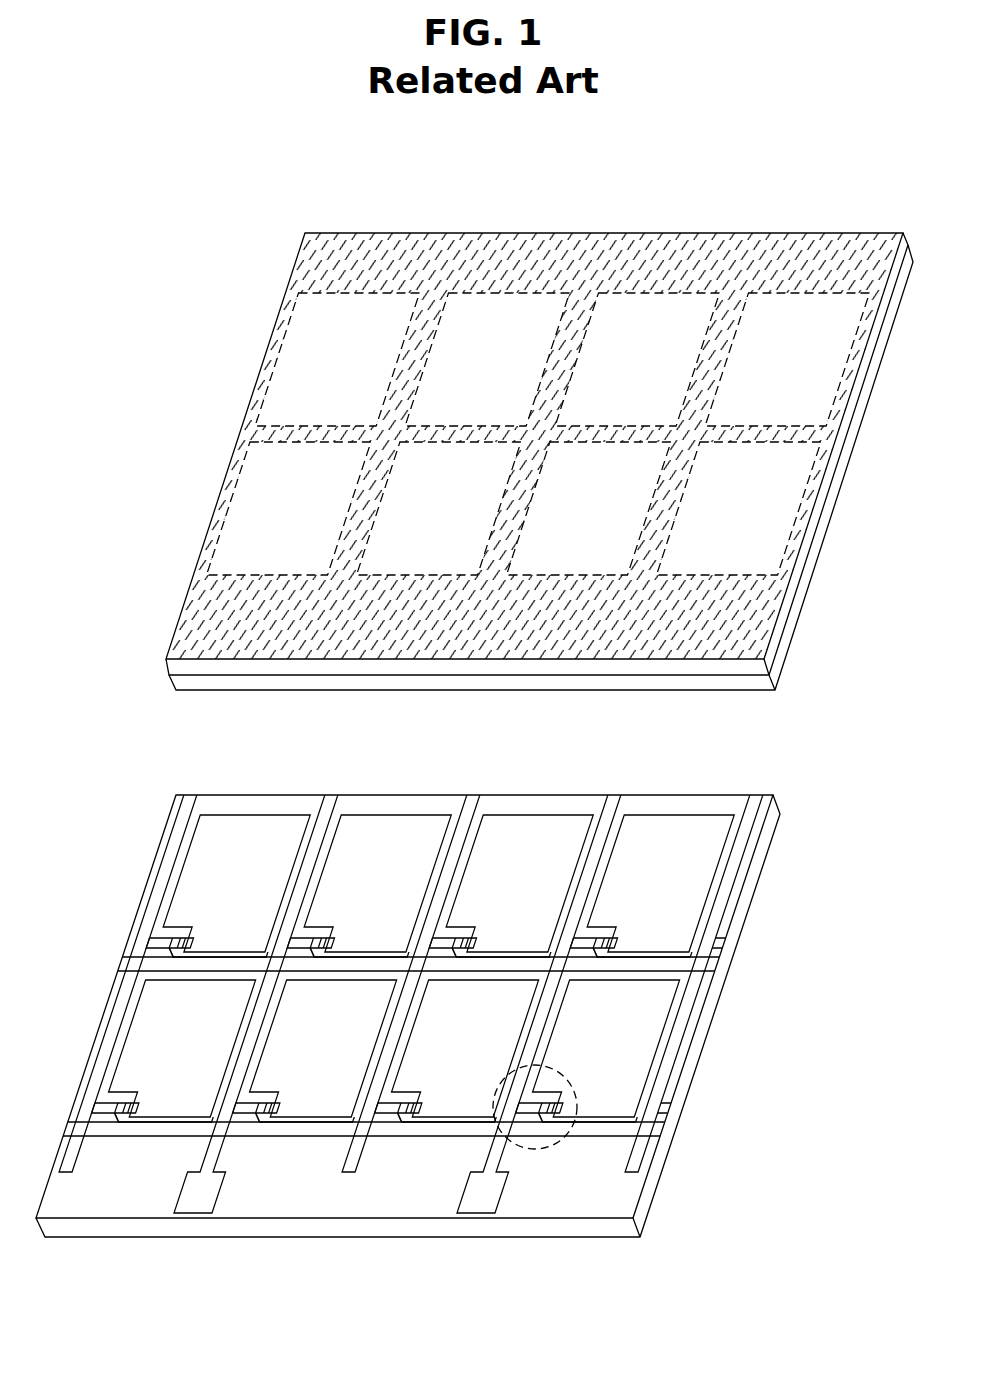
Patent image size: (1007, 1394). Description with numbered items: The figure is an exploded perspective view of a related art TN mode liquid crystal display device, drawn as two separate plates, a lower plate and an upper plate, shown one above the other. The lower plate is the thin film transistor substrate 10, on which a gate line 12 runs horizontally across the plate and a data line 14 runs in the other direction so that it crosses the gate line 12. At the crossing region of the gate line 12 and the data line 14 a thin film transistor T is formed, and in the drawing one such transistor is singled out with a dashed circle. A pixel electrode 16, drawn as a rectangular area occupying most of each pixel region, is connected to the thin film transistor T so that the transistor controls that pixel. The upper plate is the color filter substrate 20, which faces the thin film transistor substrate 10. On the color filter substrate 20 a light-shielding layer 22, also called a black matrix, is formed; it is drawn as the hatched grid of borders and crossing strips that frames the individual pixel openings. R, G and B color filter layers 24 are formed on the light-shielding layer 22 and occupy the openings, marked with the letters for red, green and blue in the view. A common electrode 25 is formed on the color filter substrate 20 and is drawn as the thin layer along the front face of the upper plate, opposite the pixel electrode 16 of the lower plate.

The thin film transistor substrate 10 is at (633, 1238).
The gate line 12 is at (643, 1130).
The data line 14 is at (487, 1157).
The pixel electrode 16 is at (652, 1061).
The thin film transistor T is at (537, 1150).
The color filter substrate 20 is at (753, 667).
The light-shielding layer 22 is at (828, 431).
The R, G and B color filter layers 24 is at (598, 330).
The common electrode 25 is at (757, 683).